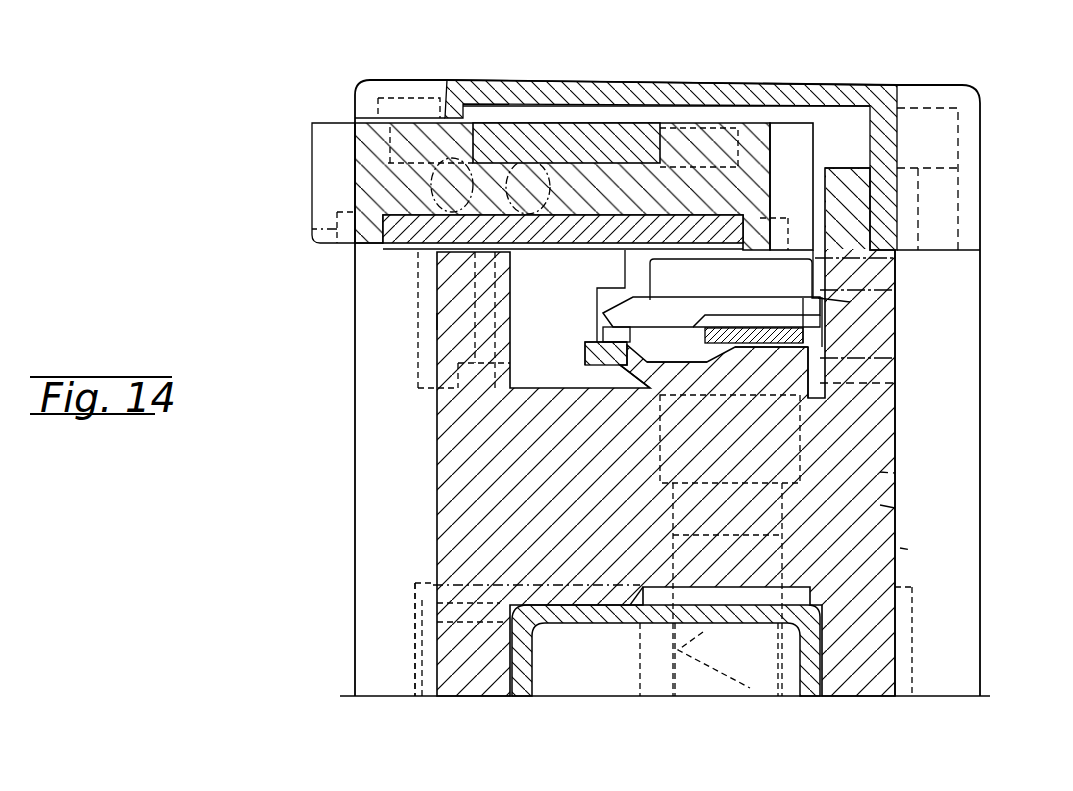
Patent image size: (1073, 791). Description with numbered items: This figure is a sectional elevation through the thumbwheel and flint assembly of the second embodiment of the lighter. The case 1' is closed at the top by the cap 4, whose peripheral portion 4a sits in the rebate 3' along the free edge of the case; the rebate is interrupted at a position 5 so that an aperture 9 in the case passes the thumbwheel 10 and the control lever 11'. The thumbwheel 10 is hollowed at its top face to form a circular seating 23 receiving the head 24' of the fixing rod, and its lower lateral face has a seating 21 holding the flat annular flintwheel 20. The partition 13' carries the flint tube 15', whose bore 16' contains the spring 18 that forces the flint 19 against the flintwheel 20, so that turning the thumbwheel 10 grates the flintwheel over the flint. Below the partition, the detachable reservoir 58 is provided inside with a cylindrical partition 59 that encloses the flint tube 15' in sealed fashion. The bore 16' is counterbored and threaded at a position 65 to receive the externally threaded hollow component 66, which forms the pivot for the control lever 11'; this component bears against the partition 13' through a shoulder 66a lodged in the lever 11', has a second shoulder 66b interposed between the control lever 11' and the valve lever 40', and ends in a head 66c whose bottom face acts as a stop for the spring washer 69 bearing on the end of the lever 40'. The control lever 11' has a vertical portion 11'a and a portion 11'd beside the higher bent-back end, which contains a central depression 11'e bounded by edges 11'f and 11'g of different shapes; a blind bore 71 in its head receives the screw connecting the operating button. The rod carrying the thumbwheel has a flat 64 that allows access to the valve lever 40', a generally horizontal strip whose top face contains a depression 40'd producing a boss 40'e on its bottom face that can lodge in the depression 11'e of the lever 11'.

The case 1' is at (951, 473).
The rebate 3' is at (910, 230).
The cap 4 is at (834, 80).
The peripheral portion of the cap 4a is at (882, 113).
The cut-out 5 is at (432, 262).
The aperture 9 is at (437, 118).
The thumbwheel 10 is at (335, 142).
The control lever 11' is at (602, 432).
The vertical portion of the control lever 11'a is at (362, 323).
The portion of the control lever 11'd is at (574, 340).
The central depression 11'e is at (848, 402).
The edge of the depression 11'f is at (880, 385).
The edge of the depression 11'g is at (622, 397).
The partition 13' is at (960, 521).
The flint tube 15' is at (672, 659).
The bore of the flint tube 16' is at (970, 561).
The spring 18 is at (702, 664).
The flint 19 is at (895, 258).
The flintwheel 20 is at (606, 307).
The seating 21 is at (312, 229).
The circular seating 23 is at (757, 115).
The head of the fixing screw 24' is at (640, 103).
The valve lever 40' is at (711, 295).
The depression 40'd is at (749, 303).
The boss 40'e is at (691, 405).
The detachable reservoir 58 is at (412, 645).
The cylindrical partition 59 is at (880, 663).
The flat 64 is at (603, 297).
The counterbored threaded position 65 is at (895, 473).
The hollow component 66 is at (895, 290).
The shoulder 66a is at (895, 383).
The second shoulder 66b is at (895, 358).
The head 66c is at (850, 302).
The spring washer 69 is at (712, 312).
The blind bore 71 is at (493, 160).